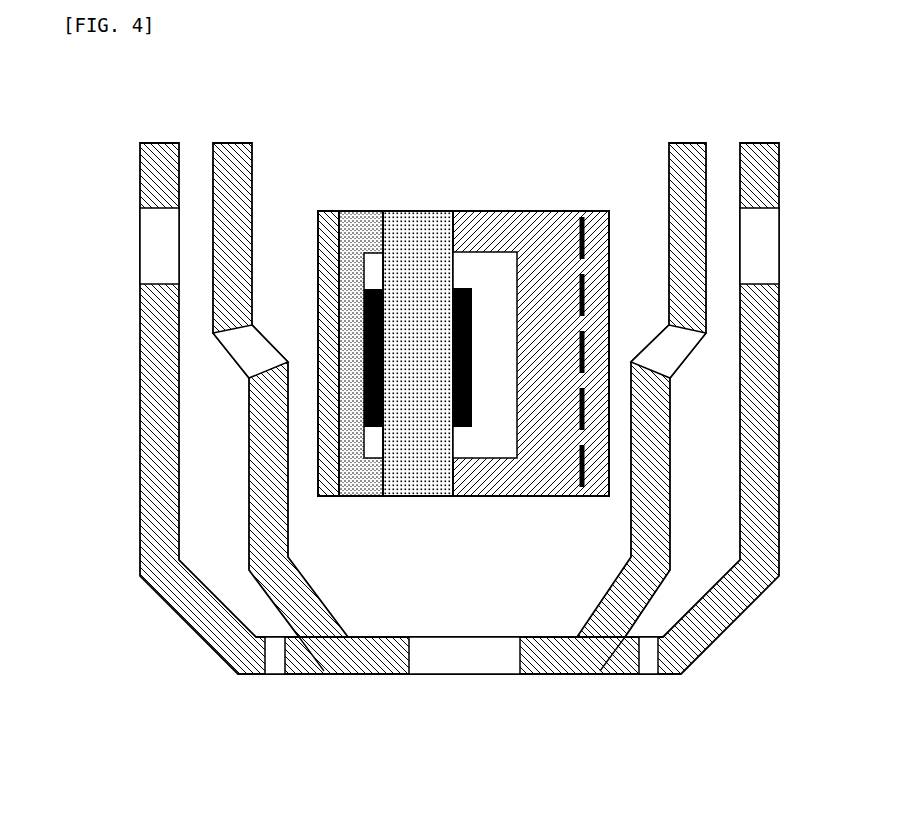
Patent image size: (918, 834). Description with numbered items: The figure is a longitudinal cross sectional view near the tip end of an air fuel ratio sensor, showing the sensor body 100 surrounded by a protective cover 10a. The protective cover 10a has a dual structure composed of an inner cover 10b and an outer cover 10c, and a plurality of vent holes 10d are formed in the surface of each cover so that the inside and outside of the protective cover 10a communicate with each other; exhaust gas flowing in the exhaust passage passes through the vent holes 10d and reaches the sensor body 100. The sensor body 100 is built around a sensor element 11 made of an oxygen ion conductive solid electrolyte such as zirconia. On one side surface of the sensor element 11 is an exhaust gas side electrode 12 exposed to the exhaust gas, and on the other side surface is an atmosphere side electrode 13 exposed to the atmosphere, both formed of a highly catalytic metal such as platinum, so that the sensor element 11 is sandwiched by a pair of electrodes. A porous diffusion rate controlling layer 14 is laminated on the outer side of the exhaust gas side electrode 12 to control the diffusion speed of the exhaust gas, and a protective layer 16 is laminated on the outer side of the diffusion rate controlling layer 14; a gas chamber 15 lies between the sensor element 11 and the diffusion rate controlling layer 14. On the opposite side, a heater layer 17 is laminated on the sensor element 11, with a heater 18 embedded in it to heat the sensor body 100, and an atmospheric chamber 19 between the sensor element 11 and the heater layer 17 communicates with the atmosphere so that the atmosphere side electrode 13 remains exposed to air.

The sensor body 100 is at (519, 140).
The protective cover 10a is at (232, 699).
The inner cover 10b is at (251, 470).
The outer cover 10c is at (193, 631).
The vent holes 10d is at (172, 233).
The sensor element 11 is at (402, 211).
The exhaust gas side electrode 12 is at (373, 289).
The atmosphere side electrode 13 is at (463, 288).
The diffusion rate controlling layer 14 is at (373, 498).
The gas chamber 15 is at (372, 454).
The protective layer 16 is at (324, 211).
The heater layer 17 is at (516, 498).
The heater 18 is at (585, 221).
The atmospheric chamber 19 is at (494, 448).